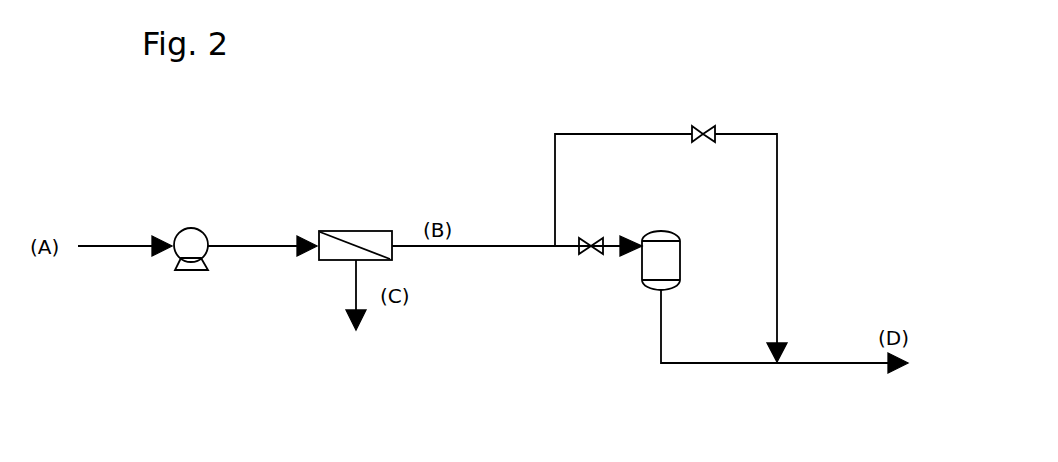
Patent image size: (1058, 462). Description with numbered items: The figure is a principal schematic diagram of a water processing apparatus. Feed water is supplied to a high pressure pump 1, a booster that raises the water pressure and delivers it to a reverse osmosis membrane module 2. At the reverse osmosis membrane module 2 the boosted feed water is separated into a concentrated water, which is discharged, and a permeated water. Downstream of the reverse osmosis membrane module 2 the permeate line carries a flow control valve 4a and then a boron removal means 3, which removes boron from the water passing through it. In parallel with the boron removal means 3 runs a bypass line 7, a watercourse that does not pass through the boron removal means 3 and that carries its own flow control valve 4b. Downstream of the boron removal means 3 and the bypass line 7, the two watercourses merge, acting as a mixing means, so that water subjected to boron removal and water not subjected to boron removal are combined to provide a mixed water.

The high pressure pump 1 is at (200, 228).
The reverse osmosis membrane module 2 is at (360, 231).
The boron removal means 3 is at (660, 231).
The flow control valve 4a is at (593, 238).
The flow control valve 4b is at (705, 127).
The bypass line 7 is at (671, 234).